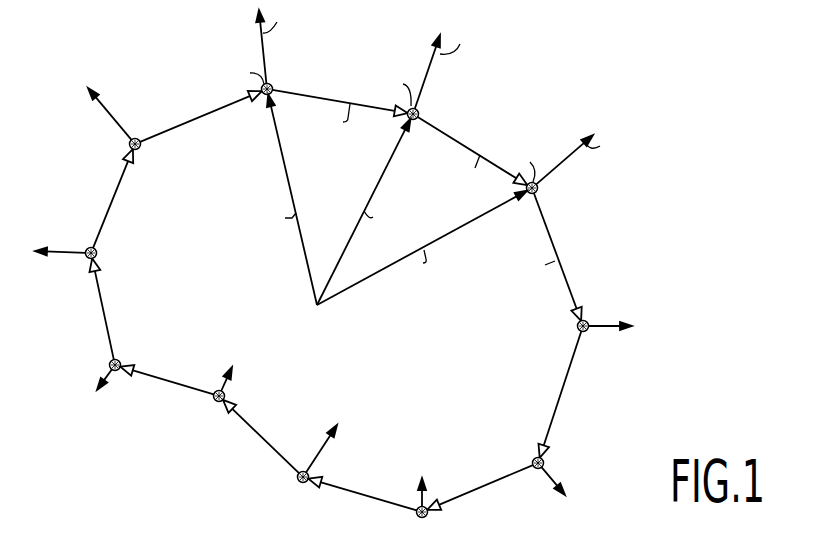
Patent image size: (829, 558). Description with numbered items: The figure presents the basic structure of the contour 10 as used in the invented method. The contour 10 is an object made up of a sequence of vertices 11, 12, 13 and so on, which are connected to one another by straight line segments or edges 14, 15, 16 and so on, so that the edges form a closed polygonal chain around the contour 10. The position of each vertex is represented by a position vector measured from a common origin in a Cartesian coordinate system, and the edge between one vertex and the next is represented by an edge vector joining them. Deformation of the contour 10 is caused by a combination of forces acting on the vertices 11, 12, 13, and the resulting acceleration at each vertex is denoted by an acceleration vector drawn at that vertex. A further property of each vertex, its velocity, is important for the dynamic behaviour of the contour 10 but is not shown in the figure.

The contour 10 is at (237, 448).
The vertex 11 is at (118, 360).
The vertex 12 is at (227, 392).
The vertex 13 is at (308, 473).
The edge 14 is at (175, 382).
The edge 15 is at (260, 430).
The edge 16 is at (372, 495).